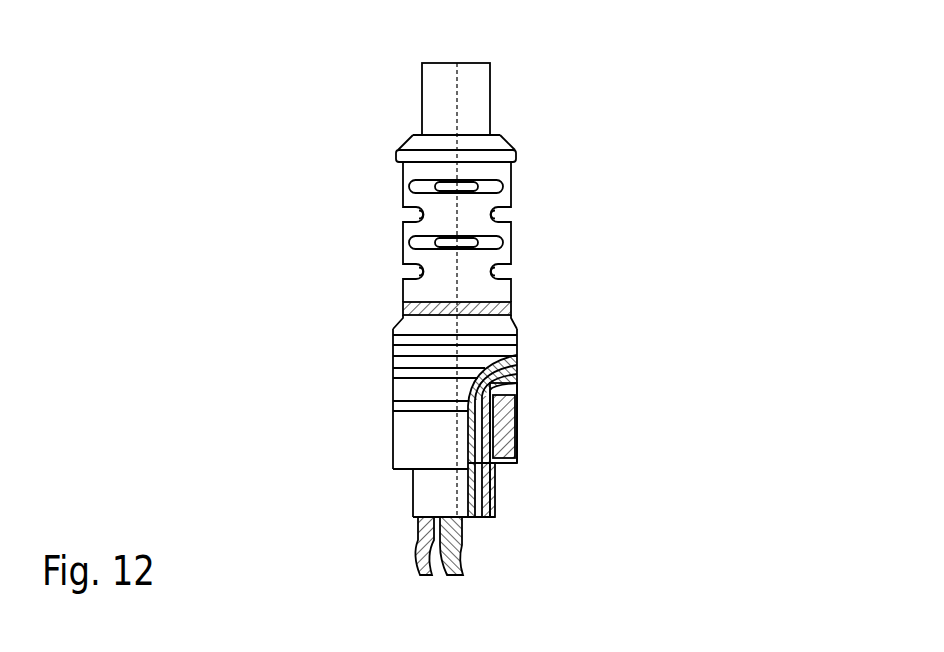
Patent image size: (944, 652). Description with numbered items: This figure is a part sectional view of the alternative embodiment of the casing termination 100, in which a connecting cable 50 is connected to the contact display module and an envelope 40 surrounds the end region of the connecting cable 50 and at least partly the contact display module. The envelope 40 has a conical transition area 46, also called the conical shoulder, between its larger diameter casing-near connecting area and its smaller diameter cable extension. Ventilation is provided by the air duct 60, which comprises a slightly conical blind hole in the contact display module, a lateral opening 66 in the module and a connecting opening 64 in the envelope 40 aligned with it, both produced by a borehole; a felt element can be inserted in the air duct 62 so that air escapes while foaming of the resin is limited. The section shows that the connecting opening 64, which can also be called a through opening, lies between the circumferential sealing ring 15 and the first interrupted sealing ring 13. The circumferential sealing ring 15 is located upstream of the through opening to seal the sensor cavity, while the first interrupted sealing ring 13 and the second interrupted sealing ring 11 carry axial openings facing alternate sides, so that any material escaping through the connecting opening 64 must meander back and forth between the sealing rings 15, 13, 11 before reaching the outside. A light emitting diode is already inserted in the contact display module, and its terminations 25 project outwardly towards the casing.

The connecting cable 50 is at (472, 90).
The casing termination 100 is at (580, 137).
The envelope 40 is at (412, 292).
The conical transition area 46 is at (500, 329).
The second interrupted sealing ring 11 is at (405, 350).
The first interrupted sealing ring 13 is at (402, 374).
The circumferential sealing ring 15 is at (405, 410).
The lateral opening 66 is at (480, 392).
The connecting opening 64 is at (512, 392).
The air duct 62 is at (485, 465).
The air duct 60 is at (482, 495).
The terminations 25 is at (468, 532).